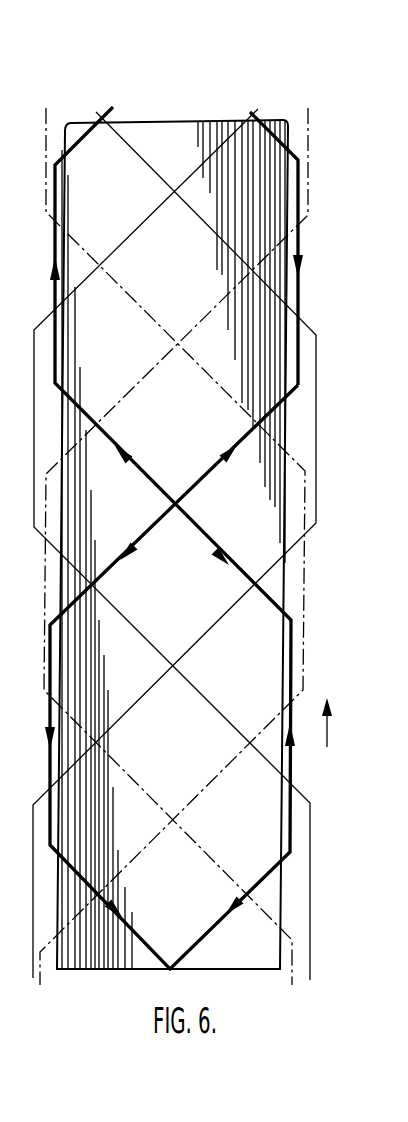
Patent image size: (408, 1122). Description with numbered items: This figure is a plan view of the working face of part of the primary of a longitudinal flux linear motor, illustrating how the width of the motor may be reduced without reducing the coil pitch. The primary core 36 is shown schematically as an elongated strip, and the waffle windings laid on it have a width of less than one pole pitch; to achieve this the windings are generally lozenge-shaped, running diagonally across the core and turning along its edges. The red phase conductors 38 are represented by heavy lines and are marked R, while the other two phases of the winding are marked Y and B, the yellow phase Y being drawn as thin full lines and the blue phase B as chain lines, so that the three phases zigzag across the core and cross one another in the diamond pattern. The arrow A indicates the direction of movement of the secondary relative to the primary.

The primary core 36 is at (287, 133).
The red phase conductors 38 is at (298, 198).
The red phase R is at (314, 268).
The yellow phase Y is at (316, 403).
The blue phase B is at (314, 582).
The arrow indicating direction of movement A is at (325, 737).